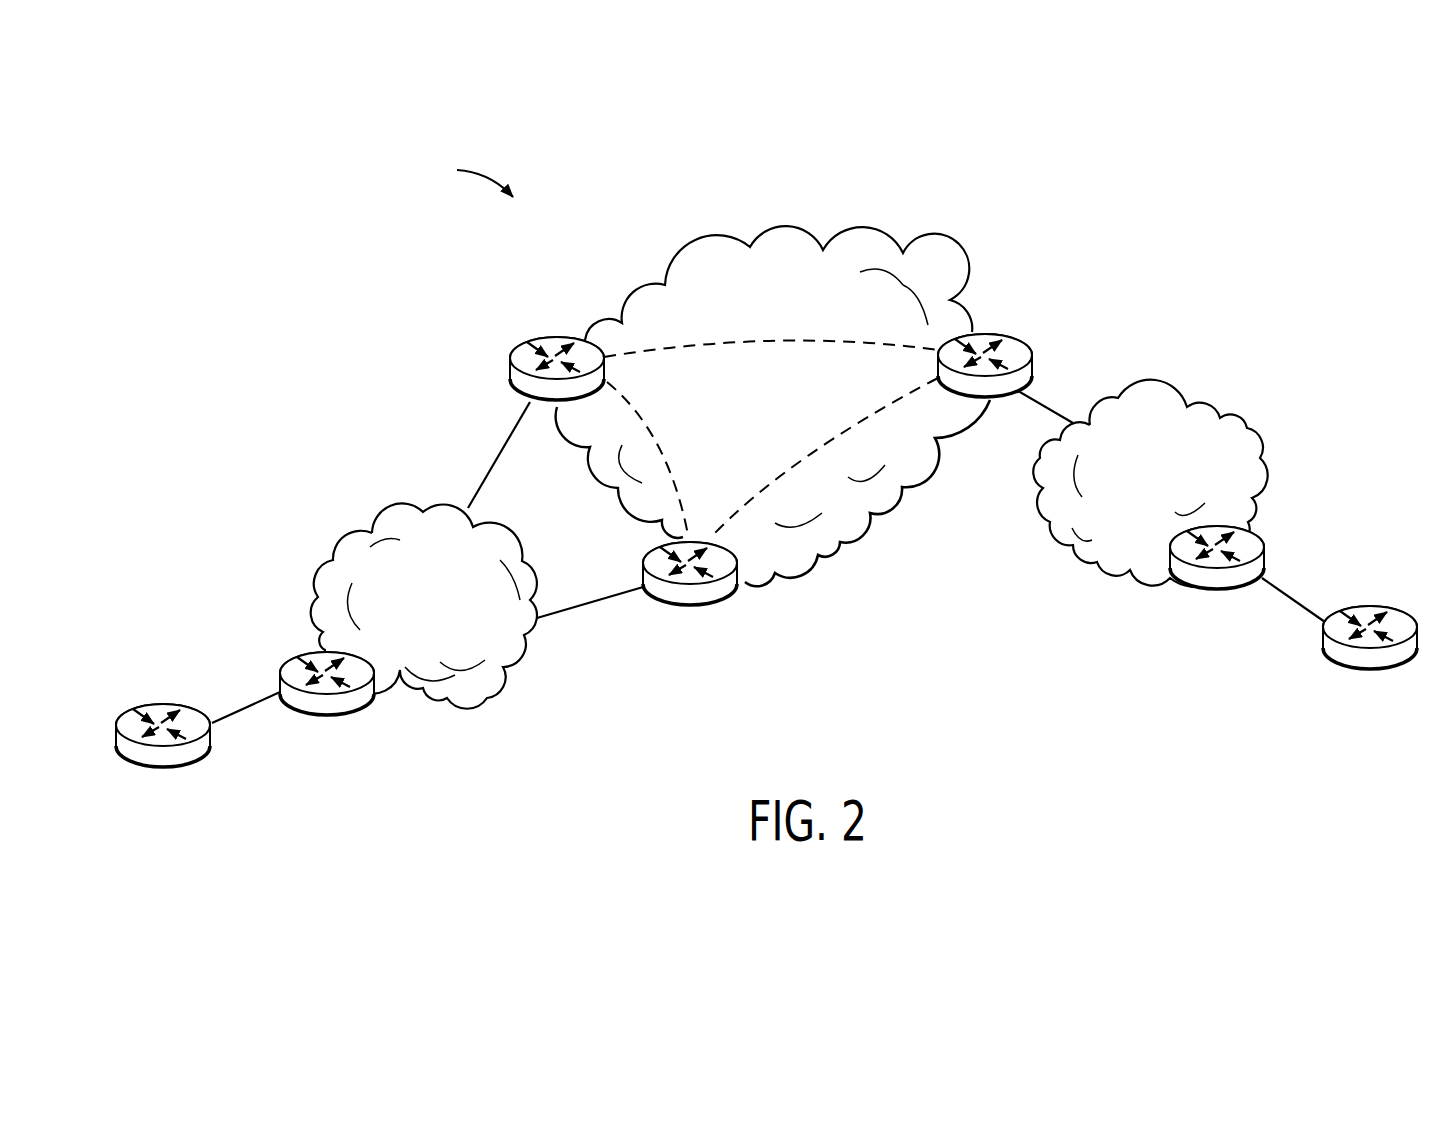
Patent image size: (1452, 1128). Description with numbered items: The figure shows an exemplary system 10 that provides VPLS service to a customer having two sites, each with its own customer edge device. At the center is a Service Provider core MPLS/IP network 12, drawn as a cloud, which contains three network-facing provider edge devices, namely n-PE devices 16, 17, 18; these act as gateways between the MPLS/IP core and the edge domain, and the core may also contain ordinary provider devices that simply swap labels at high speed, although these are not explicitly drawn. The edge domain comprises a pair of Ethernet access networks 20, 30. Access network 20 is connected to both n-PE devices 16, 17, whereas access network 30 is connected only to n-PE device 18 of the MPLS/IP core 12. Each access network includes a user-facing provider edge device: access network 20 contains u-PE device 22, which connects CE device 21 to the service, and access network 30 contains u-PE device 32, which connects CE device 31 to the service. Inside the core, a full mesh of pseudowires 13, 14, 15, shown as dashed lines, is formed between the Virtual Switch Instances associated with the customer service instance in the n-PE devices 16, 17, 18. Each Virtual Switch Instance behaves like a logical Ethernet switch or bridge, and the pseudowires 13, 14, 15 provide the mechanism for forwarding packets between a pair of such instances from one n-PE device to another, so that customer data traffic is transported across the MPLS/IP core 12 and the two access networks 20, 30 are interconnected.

The system 10 is at (467, 177).
The MPLS/IP network 12 is at (947, 243).
The pseudowire 13 is at (786, 340).
The pseudowire 14 is at (830, 430).
The pseudowire 15 is at (658, 440).
The n-PE device 16 is at (512, 375).
The n-PE device 17 is at (707, 610).
The n-PE device 18 is at (1033, 363).
The access network 20 is at (397, 502).
The CE device 21 is at (170, 771).
The u-PE device 22 is at (343, 720).
The access network 30 is at (1248, 411).
The CE device 31 is at (1385, 673).
The u-PE device 32 is at (1205, 592).